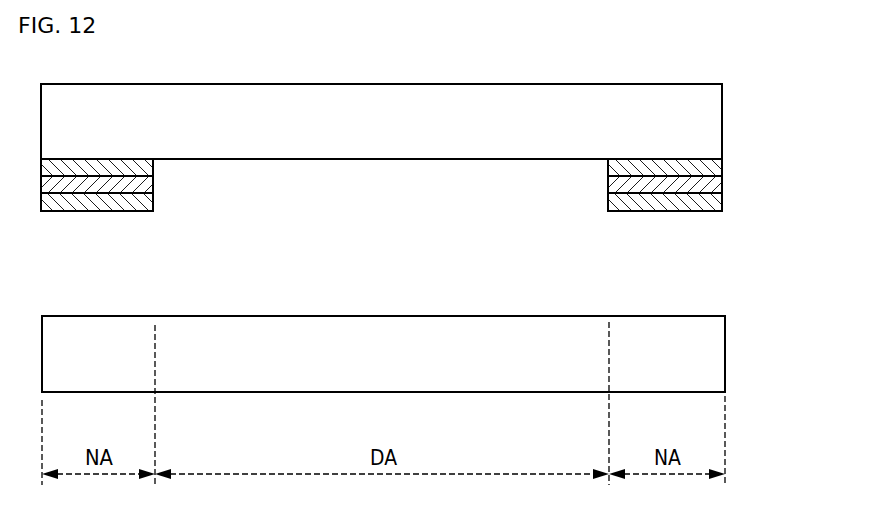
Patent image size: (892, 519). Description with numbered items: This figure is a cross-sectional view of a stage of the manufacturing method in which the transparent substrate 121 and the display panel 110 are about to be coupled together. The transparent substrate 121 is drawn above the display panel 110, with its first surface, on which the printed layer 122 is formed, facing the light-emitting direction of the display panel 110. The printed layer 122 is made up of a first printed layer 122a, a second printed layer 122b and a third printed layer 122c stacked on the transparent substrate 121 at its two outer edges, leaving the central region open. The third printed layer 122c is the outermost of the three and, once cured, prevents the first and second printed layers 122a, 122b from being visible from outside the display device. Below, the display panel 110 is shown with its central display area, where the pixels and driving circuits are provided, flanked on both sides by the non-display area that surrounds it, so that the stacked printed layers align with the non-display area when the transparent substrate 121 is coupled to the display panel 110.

The transparent substrate 121 is at (714, 118).
The printed layer 122 is at (811, 145).
The first printed layer 122a is at (724, 167).
The second printed layer 122b is at (724, 184).
The third printed layer 122c is at (724, 197).
The display panel 110 is at (717, 353).